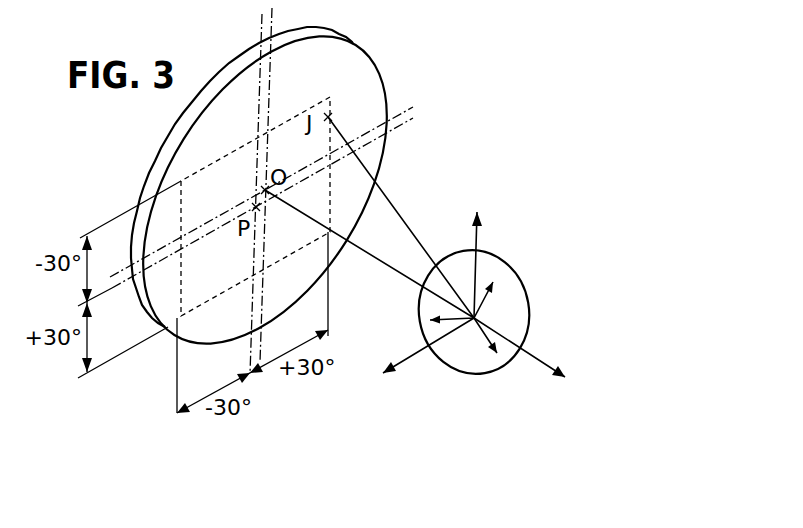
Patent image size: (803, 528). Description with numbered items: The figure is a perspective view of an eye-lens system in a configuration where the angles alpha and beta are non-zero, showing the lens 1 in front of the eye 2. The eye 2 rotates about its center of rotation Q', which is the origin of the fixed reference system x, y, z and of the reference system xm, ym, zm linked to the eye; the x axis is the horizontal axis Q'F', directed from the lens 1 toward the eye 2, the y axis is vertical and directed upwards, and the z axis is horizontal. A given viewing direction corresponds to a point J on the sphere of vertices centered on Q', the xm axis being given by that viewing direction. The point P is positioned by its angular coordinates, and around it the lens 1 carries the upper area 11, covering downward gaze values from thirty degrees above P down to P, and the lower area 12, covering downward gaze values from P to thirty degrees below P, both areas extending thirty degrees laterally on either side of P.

The lens 1 is at (254, 193).
The upper area 11 is at (207, 187).
The lower area 12 is at (195, 280).
The camera / measuring unit 2 is at (527, 270).